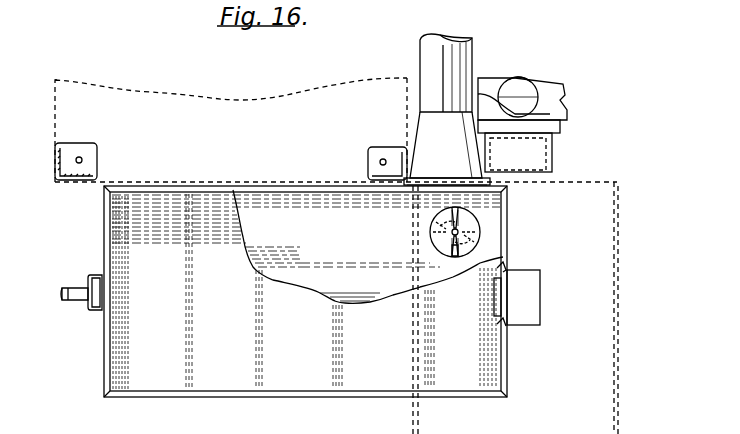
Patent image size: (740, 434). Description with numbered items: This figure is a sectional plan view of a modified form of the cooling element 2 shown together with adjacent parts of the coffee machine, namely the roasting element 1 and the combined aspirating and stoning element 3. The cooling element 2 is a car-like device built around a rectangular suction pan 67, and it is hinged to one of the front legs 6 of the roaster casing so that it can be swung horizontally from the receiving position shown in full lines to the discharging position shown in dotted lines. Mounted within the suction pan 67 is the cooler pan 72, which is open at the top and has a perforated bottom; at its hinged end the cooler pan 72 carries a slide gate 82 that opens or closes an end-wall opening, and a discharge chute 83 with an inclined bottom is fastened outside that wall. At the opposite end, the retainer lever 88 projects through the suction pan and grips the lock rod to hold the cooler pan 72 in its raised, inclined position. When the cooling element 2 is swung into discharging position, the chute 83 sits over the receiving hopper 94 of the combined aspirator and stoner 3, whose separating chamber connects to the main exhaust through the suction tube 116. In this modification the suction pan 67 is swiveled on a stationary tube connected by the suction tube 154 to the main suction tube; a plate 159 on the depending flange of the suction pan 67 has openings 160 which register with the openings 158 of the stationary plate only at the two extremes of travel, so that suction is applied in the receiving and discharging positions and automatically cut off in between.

The roasting element 1 is at (56, 106).
The cooling element 2 is at (420, 422).
The combined aspirating and stoning element 3 is at (560, 126).
The front leg 6 is at (64, 183).
The suction pan 67 is at (507, 217).
The cooler pan 72 is at (305, 392).
The slide gate 82 is at (495, 303).
The discharge chute 83 is at (552, 166).
The retainer lever 88 is at (82, 298).
The receiving hopper 94 is at (526, 140).
The suction tube 116 is at (567, 98).
The suction tube 154 is at (472, 60).
The openings 158 is at (435, 228).
The plate 159 is at (450, 237).
The openings 160 is at (453, 256).